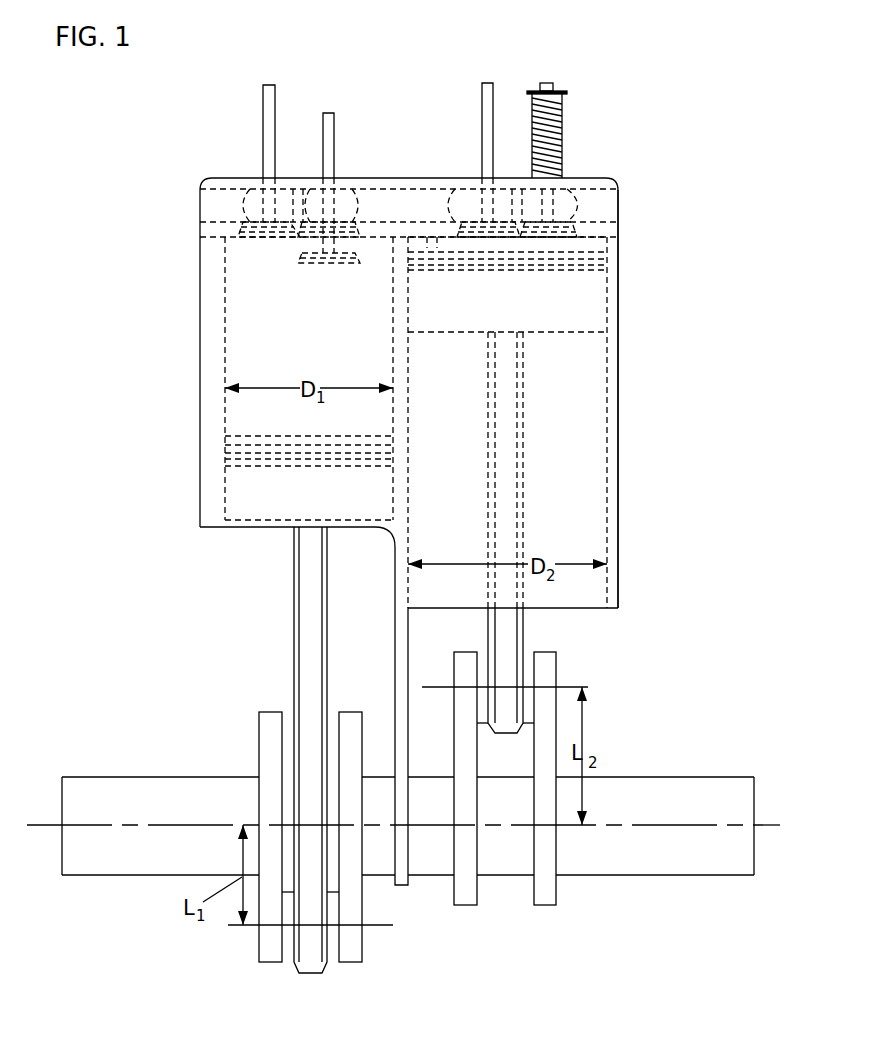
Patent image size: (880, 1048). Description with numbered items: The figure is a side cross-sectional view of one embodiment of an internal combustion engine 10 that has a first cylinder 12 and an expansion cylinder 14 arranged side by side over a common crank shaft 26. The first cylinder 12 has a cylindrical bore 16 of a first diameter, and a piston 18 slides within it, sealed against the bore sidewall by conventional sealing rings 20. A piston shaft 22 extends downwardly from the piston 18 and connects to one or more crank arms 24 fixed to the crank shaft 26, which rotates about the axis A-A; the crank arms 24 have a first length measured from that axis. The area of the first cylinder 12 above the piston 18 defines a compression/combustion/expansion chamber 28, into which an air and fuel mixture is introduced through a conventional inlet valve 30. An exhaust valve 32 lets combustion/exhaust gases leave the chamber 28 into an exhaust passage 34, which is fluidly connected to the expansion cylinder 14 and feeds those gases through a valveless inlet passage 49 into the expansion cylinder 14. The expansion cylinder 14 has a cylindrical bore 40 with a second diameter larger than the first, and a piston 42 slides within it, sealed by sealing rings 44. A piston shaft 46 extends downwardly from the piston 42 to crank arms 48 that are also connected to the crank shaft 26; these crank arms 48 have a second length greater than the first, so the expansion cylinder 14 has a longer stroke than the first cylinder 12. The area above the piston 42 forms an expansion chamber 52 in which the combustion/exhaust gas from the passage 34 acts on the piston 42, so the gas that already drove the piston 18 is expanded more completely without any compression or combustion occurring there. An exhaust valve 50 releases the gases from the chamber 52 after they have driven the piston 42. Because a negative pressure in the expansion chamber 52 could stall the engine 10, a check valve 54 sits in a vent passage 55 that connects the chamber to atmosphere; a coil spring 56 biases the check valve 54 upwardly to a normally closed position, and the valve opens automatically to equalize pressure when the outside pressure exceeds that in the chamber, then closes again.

The internal combustion engine 10 is at (660, 305).
The first cylinder 12 is at (190, 368).
The expansion cylinder 14 is at (630, 379).
The cylindrical bore 16 is at (225, 293).
The piston 18 is at (260, 505).
The sealing rings 20 is at (231, 450).
The piston shaft 22 is at (302, 622).
The crank arms 24 is at (268, 958).
The crank shaft 26 is at (93, 875).
The compression/combustion/expansion chamber 28 is at (262, 283).
The inlet valve 30 is at (272, 170).
The exhaust valve 32 is at (328, 132).
The exhaust passage 34 is at (360, 205).
The cylindrical bore 40 is at (610, 453).
The piston 42 is at (590, 312).
The sealing rings 44 is at (603, 267).
The piston shaft 46 is at (518, 632).
The crank arms 48 is at (468, 905).
The inlet passage 49 is at (432, 245).
The exhaust valve 50 is at (483, 103).
The expansion chamber 52 is at (593, 235).
The check valve 54 is at (547, 198).
The vent passage 55 is at (595, 203).
The coil spring 56 is at (557, 102).